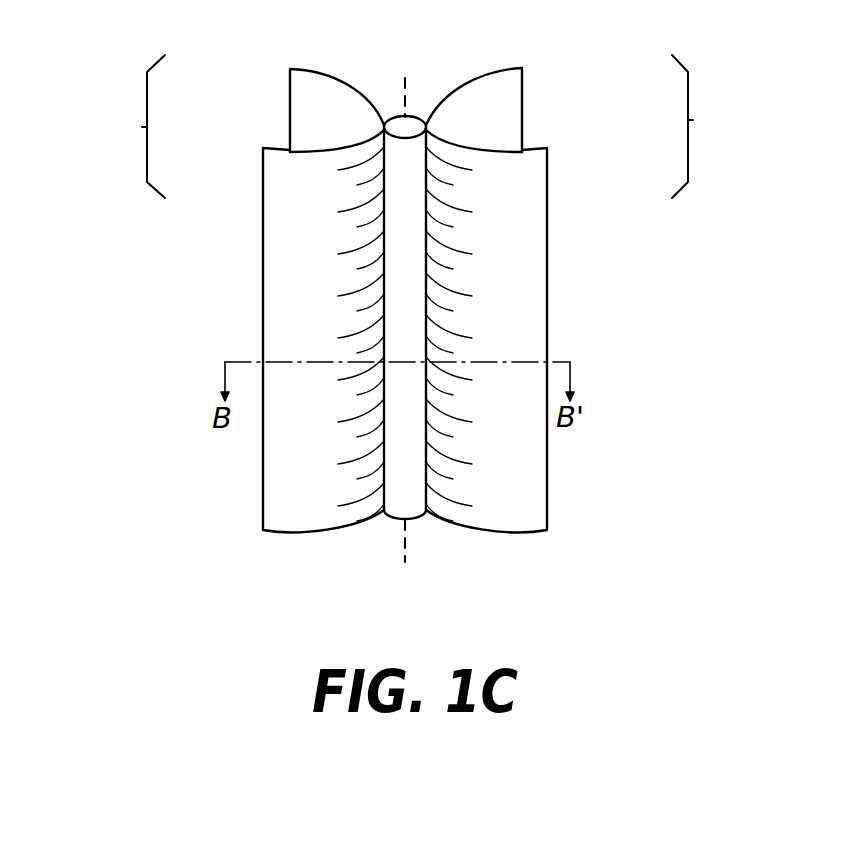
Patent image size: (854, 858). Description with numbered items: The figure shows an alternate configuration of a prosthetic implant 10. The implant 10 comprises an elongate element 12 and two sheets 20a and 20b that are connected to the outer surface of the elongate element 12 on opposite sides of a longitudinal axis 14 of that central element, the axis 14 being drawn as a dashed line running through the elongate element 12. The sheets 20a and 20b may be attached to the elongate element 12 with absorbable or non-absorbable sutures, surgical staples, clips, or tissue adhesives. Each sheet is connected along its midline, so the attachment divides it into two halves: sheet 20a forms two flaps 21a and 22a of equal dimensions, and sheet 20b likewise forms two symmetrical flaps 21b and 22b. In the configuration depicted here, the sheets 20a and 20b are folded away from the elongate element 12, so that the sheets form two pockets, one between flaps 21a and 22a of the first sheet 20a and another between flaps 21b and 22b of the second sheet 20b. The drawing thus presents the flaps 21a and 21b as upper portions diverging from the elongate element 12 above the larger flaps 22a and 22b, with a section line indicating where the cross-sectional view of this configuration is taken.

The prosthetic implant 10 is at (238, 282).
The elongate element 12 is at (412, 505).
The longitudinal axis 14 is at (407, 102).
The sheet 20a is at (688, 120).
The sheet 20b is at (147, 132).
The flap 21a is at (522, 112).
The flap 21b is at (290, 85).
The flap 22a is at (547, 193).
The flap 22b is at (263, 170).